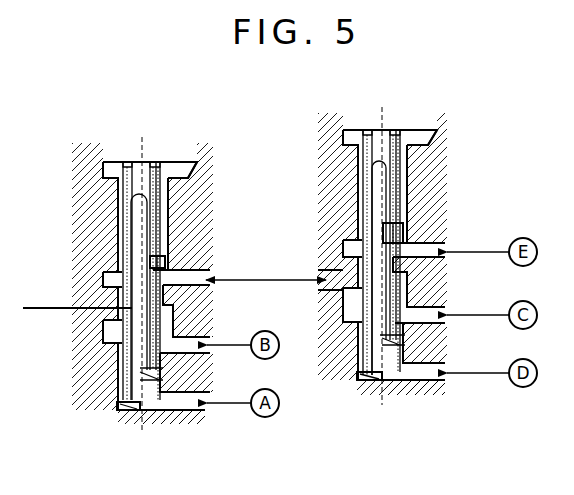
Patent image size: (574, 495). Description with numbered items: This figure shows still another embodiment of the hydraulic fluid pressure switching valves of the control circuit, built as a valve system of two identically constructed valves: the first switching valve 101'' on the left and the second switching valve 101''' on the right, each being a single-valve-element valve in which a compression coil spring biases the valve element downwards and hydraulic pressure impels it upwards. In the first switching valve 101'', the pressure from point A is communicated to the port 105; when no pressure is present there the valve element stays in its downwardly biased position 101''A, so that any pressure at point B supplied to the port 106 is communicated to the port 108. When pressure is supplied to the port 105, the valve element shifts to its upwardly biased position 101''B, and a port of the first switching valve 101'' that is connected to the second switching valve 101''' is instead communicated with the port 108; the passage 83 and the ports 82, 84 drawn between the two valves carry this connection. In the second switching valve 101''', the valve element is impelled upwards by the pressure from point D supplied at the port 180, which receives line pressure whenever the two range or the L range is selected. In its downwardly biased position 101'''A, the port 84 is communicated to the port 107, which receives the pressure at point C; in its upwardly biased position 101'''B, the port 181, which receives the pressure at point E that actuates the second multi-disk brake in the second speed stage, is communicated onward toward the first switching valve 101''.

The first switching valve 101'' is at (142, 277).
The second switching valve 101''' is at (386, 245).
The fluid port 82 is at (206, 272).
The connecting passage 83 is at (251, 281).
The port 84 is at (314, 280).
The port 105 is at (206, 403).
The port 106 is at (206, 341).
The port 107 is at (445, 314).
The port 108 is at (80, 311).
The port 180 is at (445, 371).
The port 181 is at (445, 253).
The downwardly biased position of the first switching valve 101''A is at (112, 437).
The upwardly biased position of the first switching valve 101''B is at (173, 441).
The downwardly biased position of the second switching valve 101'''A is at (354, 405).
The upwardly biased position of the second switching valve 101'''B is at (423, 409).